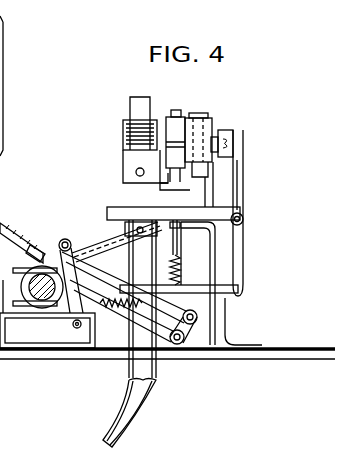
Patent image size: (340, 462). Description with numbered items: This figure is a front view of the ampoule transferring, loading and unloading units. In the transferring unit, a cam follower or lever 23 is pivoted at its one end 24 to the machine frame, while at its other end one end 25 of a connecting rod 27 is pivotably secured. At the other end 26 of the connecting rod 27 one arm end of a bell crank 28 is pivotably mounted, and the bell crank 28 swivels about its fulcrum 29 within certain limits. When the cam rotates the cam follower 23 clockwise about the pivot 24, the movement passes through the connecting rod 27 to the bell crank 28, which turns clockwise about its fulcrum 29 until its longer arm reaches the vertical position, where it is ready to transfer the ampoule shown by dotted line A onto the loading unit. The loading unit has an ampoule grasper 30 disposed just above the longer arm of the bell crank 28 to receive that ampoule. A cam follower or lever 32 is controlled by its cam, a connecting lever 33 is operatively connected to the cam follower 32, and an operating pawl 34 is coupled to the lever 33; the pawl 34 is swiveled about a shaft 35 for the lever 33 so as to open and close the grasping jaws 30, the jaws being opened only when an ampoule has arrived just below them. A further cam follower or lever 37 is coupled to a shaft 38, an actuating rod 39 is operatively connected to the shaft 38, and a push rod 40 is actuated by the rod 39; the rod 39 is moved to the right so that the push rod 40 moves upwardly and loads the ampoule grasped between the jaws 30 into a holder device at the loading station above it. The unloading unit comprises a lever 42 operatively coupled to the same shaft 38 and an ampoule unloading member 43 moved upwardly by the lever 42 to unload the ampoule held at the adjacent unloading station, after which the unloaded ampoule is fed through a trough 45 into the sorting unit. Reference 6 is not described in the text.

The roller 6 is at (27, 289).
The cam follower or lever 23 is at (50, 312).
The pivot end of lever 24 is at (74, 328).
The end of connecting rod 25 is at (64, 239).
The other end of connecting rod 26 is at (197, 318).
The connecting rod 27 is at (180, 312).
The bell crank 28 is at (142, 321).
The fulcrum 29 is at (183, 346).
The ampoule grasper 30 is at (190, 126).
The cam follower or lever 32 is at (104, 222).
The connecting lever 33 is at (243, 252).
The operating pawl 34 is at (3, 65).
The shaft 35 is at (244, 219).
The cam follower or lever 37 is at (95, 257).
The shaft 38 is at (78, 247).
The actuating rod 39 is at (179, 232).
The push rod 40 is at (176, 112).
The lever 42 is at (122, 216).
The ampoule unloading member 43 is at (135, 108).
The trough 45 is at (147, 412).
The ampoule A is at (12, 255).